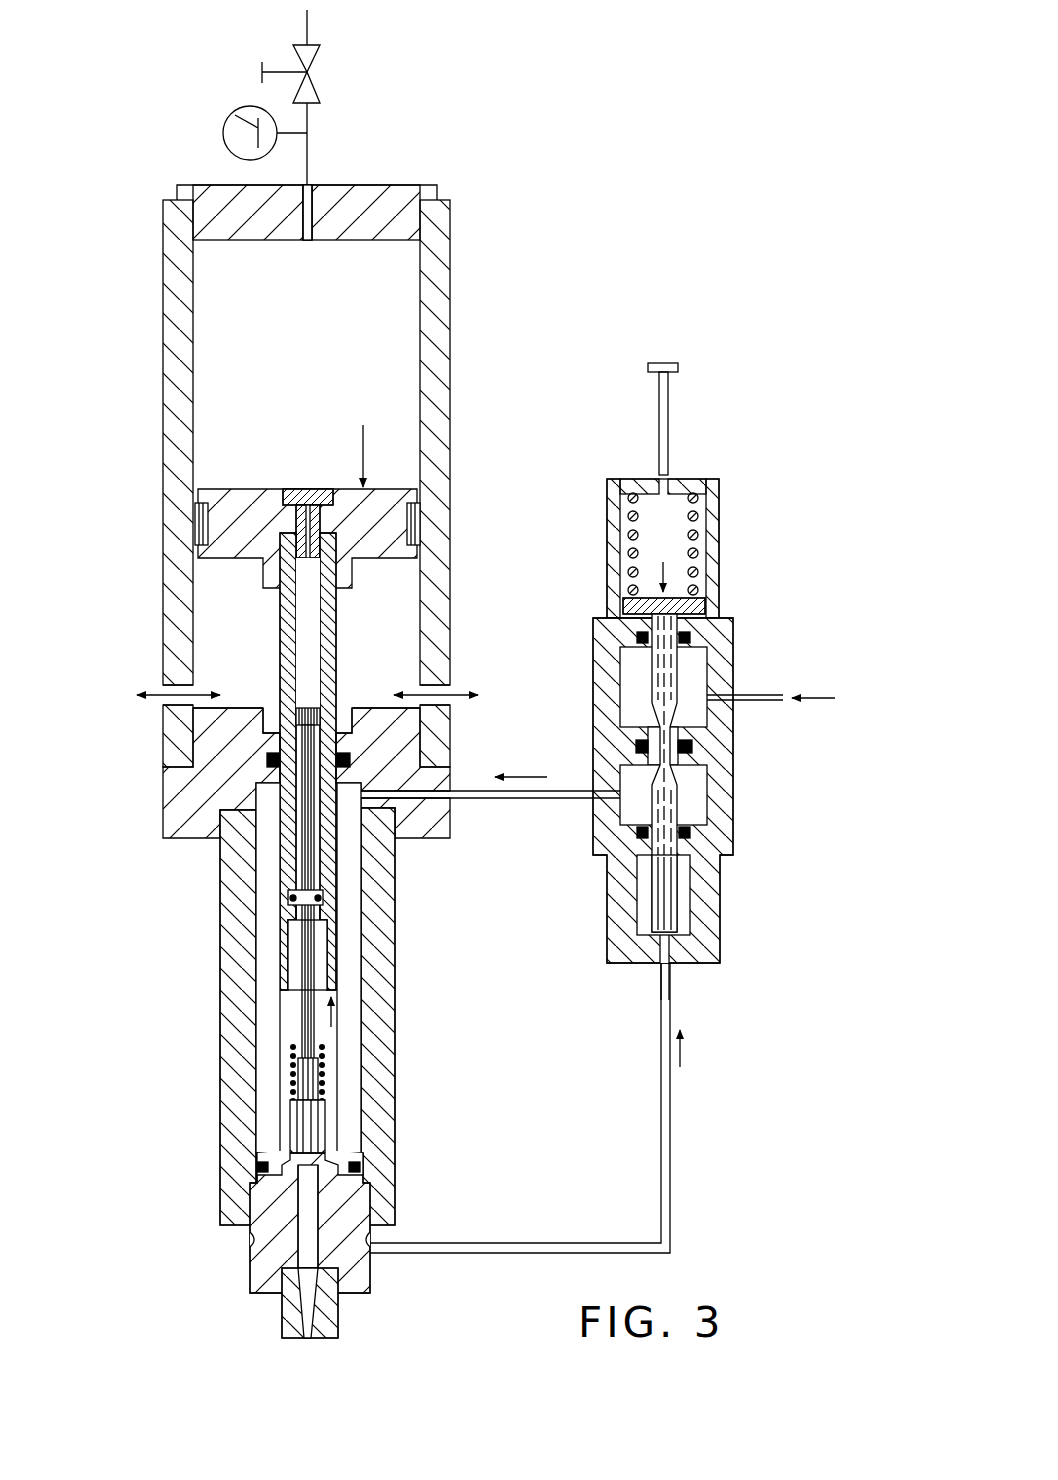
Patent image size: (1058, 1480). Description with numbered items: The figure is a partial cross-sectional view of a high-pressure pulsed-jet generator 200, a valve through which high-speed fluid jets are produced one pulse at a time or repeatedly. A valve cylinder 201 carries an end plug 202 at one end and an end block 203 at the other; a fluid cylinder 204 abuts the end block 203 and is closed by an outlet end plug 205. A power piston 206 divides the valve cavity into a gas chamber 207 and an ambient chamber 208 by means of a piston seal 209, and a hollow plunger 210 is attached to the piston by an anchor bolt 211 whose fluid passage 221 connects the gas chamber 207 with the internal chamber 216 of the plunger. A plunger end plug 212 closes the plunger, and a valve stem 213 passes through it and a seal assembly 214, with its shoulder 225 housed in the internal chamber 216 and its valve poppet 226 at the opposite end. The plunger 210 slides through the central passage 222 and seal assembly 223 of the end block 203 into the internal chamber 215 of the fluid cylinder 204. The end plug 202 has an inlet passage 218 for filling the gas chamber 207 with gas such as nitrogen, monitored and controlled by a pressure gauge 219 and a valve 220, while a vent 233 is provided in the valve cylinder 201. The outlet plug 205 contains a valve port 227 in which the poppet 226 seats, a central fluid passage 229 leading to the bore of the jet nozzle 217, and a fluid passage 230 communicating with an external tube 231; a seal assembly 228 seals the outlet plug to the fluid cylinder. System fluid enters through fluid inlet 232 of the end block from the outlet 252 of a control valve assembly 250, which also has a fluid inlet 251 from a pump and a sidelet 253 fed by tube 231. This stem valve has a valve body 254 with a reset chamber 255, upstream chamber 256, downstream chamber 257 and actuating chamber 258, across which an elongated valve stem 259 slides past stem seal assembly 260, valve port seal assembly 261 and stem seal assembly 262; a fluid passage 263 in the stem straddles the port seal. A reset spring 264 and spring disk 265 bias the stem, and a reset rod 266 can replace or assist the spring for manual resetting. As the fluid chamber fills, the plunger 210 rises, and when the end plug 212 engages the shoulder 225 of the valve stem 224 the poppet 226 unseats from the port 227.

The high-pressure pulsed-jet generator 200 is at (537, 125).
The valve cylinder 201 is at (437, 228).
The end plug 202 is at (392, 196).
The end block 203 is at (180, 820).
The fluid cylinder 204 is at (235, 1002).
The outlet end plug 205 is at (265, 1262).
The power piston 206 is at (387, 498).
The gas chamber 207 is at (393, 283).
The ambient chamber 208 is at (397, 578).
The piston seal 209 is at (410, 528).
The plunger 210 is at (288, 613).
The anchor bolt 211 is at (292, 490).
The plunger end plug 212 is at (290, 957).
The valve stem 213 is at (302, 1020).
The seal assembly 214 is at (320, 893).
The internal chamber 215 is at (350, 963).
The internal chamber 216 is at (307, 642).
The jet nozzle 217 is at (285, 1322).
The inlet passage 218 is at (350, 185).
The pressure gauge 219 is at (222, 135).
The valve 220 is at (293, 62).
The fluid passage 221 is at (310, 488).
The central passage 222 is at (343, 723).
The seal assembly 223 is at (343, 757).
The valve stem 224 is at (308, 850).
The shoulder 225 is at (300, 715).
The valve poppet 226 is at (280, 1125).
The valve port 227 is at (335, 1158).
The seal assembly 228 is at (355, 1167).
The fluid passage 229 is at (260, 1247).
The fluid passage 230 is at (350, 1272).
The external tube 231 is at (465, 1253).
The fluid inlet 232 is at (420, 803).
The vent 233 is at (435, 698).
The control valve assembly 250 is at (786, 432).
The fluid inlet 251 is at (718, 695).
The fluid outlet 252 is at (603, 803).
The sidelet 253 is at (668, 960).
The valve body 254 is at (718, 783).
The reset chamber 255 is at (700, 527).
The upstream chamber 256 is at (697, 710).
The downstream chamber 257 is at (700, 805).
The actuating chamber 258 is at (685, 922).
The valve stem 259 is at (665, 890).
The stem seal assembly 260 is at (685, 635).
The valve port seal assembly 261 is at (692, 745).
The stem seal assembly 262 is at (720, 852).
The fluid passage 263 is at (643, 723).
The reset spring 264 is at (693, 555).
The spring disk 265 is at (705, 606).
The reset rod 266 is at (670, 398).